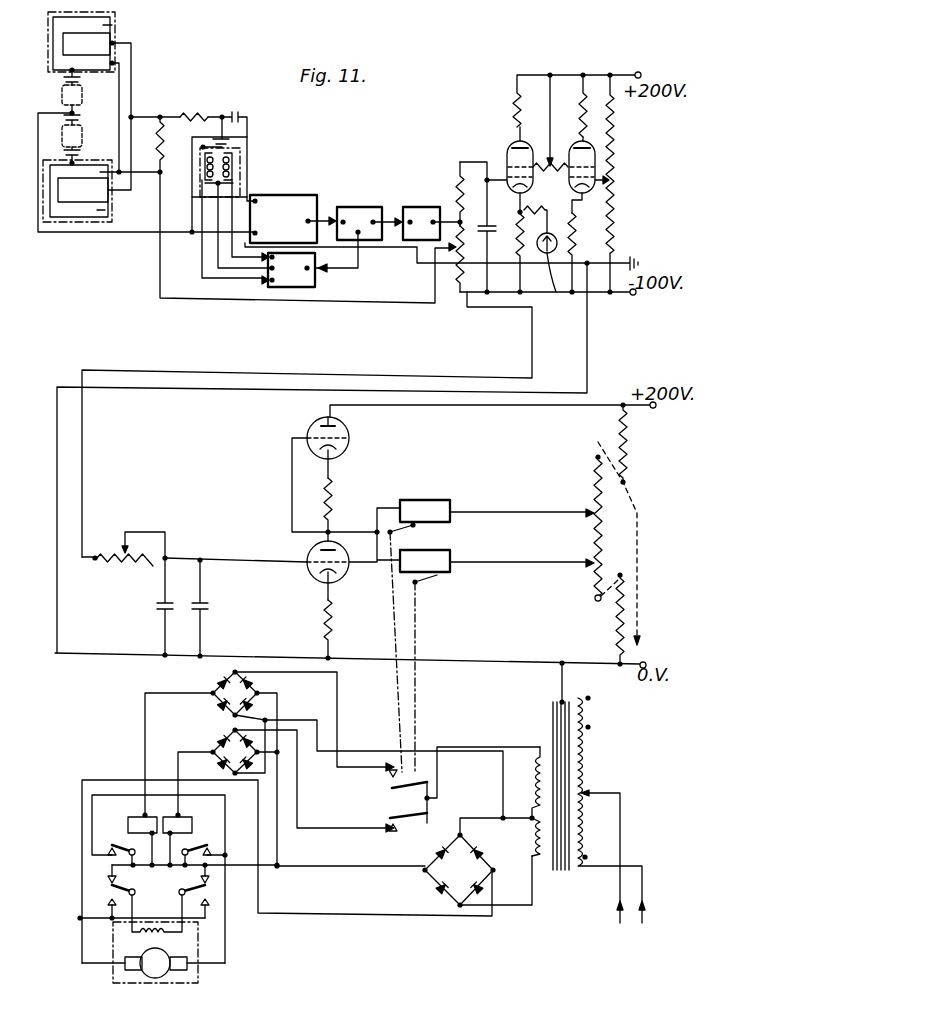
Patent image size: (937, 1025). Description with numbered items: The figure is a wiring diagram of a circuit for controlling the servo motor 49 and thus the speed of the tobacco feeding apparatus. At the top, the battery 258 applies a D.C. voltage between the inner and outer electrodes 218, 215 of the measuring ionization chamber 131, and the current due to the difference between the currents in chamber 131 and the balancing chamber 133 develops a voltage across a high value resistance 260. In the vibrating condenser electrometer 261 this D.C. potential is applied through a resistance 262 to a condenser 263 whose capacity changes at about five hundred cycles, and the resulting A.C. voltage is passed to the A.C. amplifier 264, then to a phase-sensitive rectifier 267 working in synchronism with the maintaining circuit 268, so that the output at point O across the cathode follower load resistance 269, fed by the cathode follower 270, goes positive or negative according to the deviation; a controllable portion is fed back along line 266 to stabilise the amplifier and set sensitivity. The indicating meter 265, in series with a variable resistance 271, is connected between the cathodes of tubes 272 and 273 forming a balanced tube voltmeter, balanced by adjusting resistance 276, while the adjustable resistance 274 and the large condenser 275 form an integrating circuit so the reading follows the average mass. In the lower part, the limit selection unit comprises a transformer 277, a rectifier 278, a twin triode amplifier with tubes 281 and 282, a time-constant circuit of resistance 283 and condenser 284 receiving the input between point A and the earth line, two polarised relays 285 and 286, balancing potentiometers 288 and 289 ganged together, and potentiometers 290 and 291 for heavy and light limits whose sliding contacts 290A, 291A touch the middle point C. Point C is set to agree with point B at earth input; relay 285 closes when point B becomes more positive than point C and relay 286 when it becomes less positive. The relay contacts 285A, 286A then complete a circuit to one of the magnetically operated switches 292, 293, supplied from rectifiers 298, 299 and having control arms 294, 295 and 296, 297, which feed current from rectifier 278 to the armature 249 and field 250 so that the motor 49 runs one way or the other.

The ionization chamber 131 is at (107, 10).
The ionization chamber 133 is at (65, 226).
The outer electrode 215 is at (108, 26).
The inner electrode 218 is at (122, 63).
The battery 258 is at (91, 86).
The high value resistance 260 is at (162, 128).
The resistance 262 is at (195, 113).
The condenser 263 is at (229, 175).
The vibrating condenser electrometer 261 is at (192, 184).
The A.C. amplifier 264 is at (283, 219).
The phase-sensitive rectifier 267 is at (351, 206).
The cathode follower 270 is at (416, 206).
The cathode follower load resistance 269 is at (457, 262).
The line 266 is at (308, 248).
The maintaining circuit 268 is at (287, 290).
The resistance 274 is at (462, 176).
The tube 272 is at (508, 156).
The tube 273 is at (578, 136).
The resistance 276 is at (613, 173).
The condenser 275 is at (490, 236).
The variable resistance 271 is at (547, 255).
The indicating meter 265 is at (565, 293).
The tube 282 is at (350, 437).
The tube 281 is at (343, 580).
The resistance 283 is at (116, 555).
The condenser 284 is at (158, 603).
The polarised relay 285 is at (425, 489).
The polarised relay 286 is at (447, 573).
The sliding contact 291A is at (488, 512).
The sliding contact 290A is at (500, 564).
The balancing potentiometer 289 is at (622, 428).
The potentiometer 291 is at (596, 460).
The potentiometer 290 is at (596, 592).
The balancing potentiometer 288 is at (617, 625).
The rectifier 298 is at (222, 688).
The rectifier 299 is at (227, 733).
The magnetically operated switch 292 is at (141, 816).
The magnetically operated switch 293 is at (184, 826).
The control arm 294 is at (120, 834).
The control arm 296 is at (213, 840).
The control arm 295 is at (110, 889).
The control arm 297 is at (200, 890).
The field 250 is at (158, 914).
The armature 249 is at (170, 953).
The servo motor 49 is at (168, 959).
The relay contact 285A is at (423, 778).
The relay contact 286A is at (403, 835).
The rectifier 278 is at (428, 873).
The transformer 277 is at (573, 752).
The point A is at (98, 563).
The point B is at (331, 530).
The point C is at (602, 542).